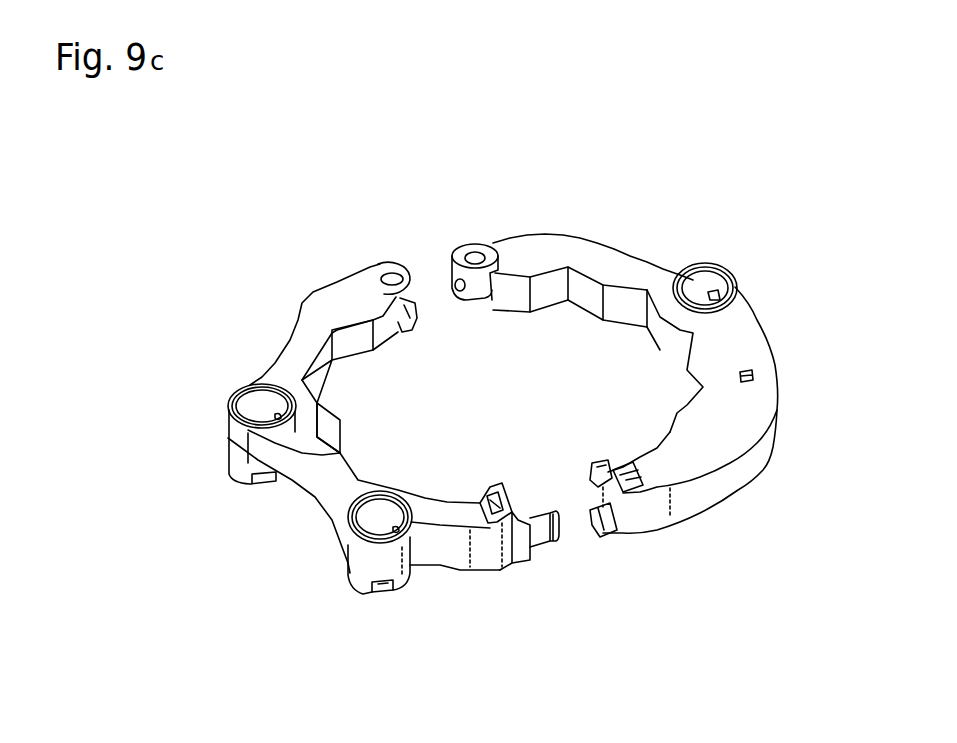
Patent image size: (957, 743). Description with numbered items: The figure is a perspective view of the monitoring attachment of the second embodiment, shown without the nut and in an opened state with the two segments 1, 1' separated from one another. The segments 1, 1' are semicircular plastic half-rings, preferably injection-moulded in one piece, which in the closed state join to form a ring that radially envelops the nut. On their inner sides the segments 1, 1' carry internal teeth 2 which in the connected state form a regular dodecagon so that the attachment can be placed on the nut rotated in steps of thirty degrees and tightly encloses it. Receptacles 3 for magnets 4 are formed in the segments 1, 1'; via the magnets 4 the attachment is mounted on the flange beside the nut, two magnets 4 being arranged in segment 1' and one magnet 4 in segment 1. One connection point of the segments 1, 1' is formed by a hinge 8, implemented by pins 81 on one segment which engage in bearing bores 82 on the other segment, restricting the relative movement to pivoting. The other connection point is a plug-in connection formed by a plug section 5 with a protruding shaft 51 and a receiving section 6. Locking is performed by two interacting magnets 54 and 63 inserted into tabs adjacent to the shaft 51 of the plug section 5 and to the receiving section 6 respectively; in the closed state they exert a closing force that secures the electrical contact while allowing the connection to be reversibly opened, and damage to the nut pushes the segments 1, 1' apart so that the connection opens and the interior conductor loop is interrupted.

The segment 1 is at (628, 383).
The segment 1' is at (346, 432).
The internal teeth 2 is at (250, 432).
The receptacle for magnets 3 is at (230, 398).
The magnet 4 is at (382, 595).
The plug section 5 is at (518, 581).
The protruding shaft 51 is at (540, 535).
The magnet 54 is at (483, 532).
The receiving section 6 is at (697, 542).
The magnet 63 is at (633, 493).
The hinge 8 is at (434, 210).
The pin 81 is at (478, 258).
The bearing bore 82 is at (388, 275).